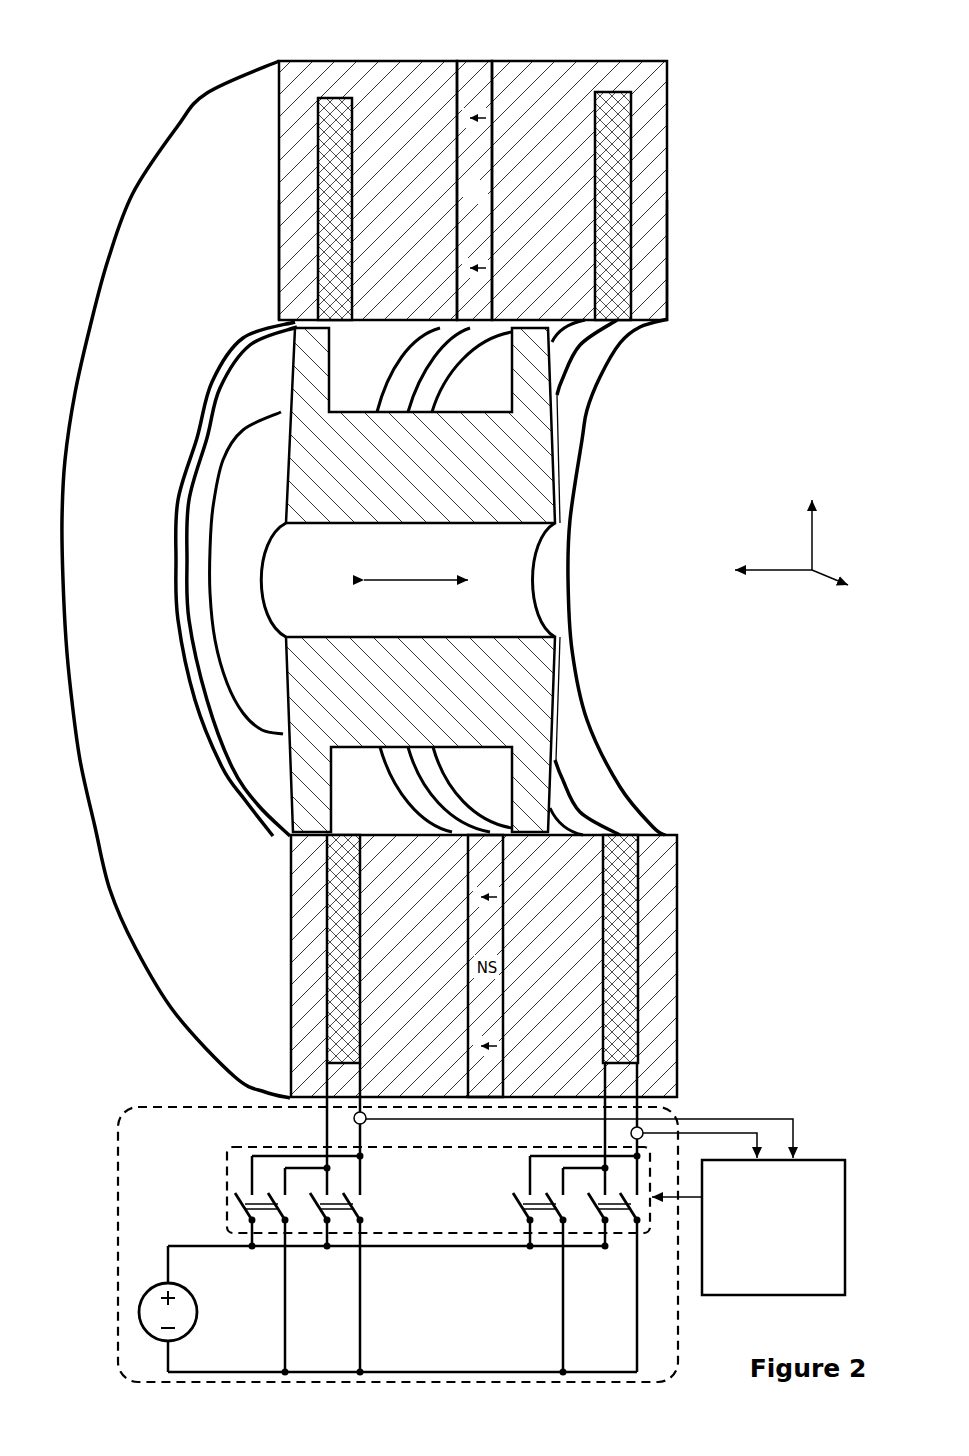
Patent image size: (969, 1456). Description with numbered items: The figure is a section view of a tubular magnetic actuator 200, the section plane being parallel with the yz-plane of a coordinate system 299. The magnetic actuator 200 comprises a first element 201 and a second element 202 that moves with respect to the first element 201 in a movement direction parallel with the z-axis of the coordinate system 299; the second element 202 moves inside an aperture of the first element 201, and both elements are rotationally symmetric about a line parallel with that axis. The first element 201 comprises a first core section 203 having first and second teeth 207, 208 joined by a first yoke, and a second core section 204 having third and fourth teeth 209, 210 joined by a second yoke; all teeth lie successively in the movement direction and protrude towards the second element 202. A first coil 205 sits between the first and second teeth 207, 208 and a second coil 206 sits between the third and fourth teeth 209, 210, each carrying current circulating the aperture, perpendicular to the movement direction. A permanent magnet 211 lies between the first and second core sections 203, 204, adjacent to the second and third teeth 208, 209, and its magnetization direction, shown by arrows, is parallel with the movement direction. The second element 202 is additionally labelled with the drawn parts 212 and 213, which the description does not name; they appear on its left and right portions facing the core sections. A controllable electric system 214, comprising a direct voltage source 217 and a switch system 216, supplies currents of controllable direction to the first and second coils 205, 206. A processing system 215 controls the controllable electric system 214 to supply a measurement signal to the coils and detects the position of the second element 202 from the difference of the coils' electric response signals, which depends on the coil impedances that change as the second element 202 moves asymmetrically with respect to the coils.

The magnetic actuator 200 is at (728, 145).
The first element 201 is at (102, 443).
The second element 202 is at (236, 508).
The first core section 203 is at (378, 60).
The second core section 204 is at (588, 58).
The first coil 205 is at (327, 162).
The second coil 206 is at (617, 128).
The first tooth 207 is at (298, 290).
The second tooth 208 is at (383, 301).
The third tooth 209 is at (536, 301).
The fourth tooth 210 is at (658, 297).
The permanent magnet 211 is at (473, 67).
The first rotor pole 212 is at (303, 370).
The second rotor pole 213 is at (530, 373).
The controllable electric system 214 is at (118, 1242).
The processing system 215 is at (755, 1276).
The switch system 216 is at (227, 1203).
The direct voltage source 217 is at (198, 1312).
The coordinate system 299 is at (754, 545).